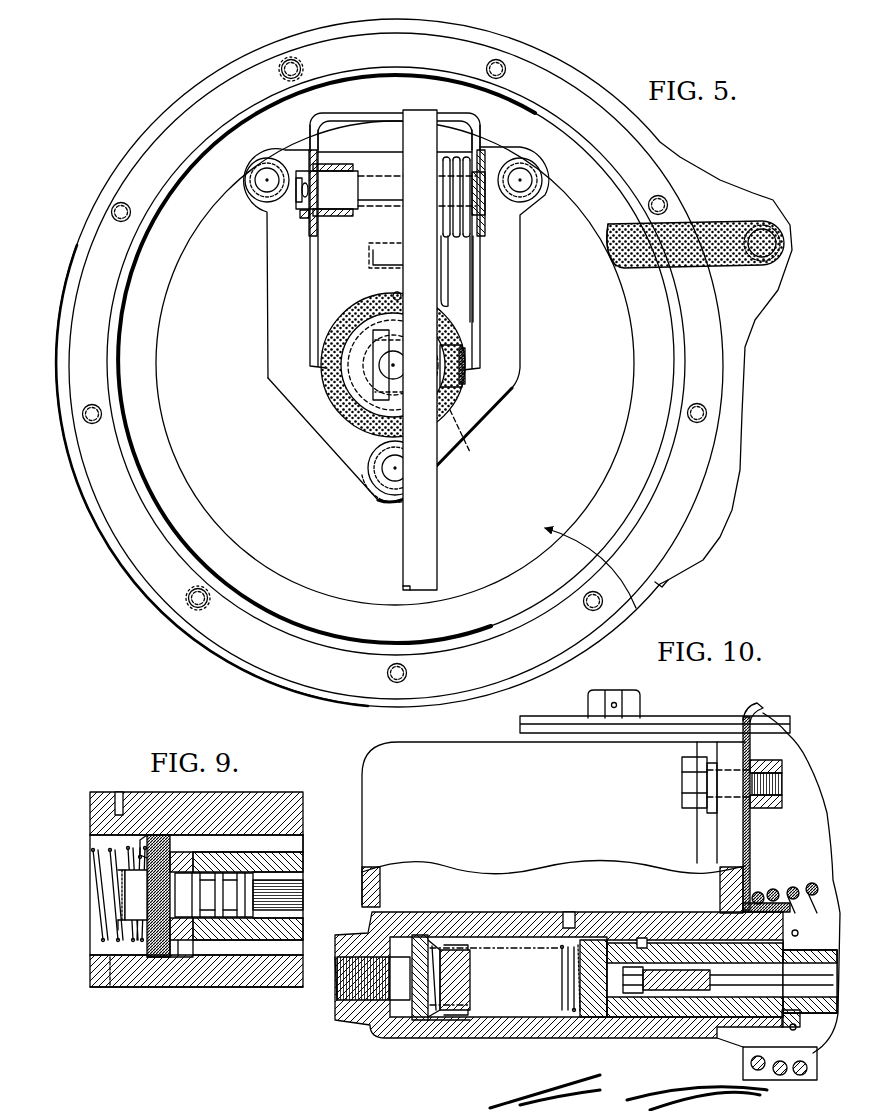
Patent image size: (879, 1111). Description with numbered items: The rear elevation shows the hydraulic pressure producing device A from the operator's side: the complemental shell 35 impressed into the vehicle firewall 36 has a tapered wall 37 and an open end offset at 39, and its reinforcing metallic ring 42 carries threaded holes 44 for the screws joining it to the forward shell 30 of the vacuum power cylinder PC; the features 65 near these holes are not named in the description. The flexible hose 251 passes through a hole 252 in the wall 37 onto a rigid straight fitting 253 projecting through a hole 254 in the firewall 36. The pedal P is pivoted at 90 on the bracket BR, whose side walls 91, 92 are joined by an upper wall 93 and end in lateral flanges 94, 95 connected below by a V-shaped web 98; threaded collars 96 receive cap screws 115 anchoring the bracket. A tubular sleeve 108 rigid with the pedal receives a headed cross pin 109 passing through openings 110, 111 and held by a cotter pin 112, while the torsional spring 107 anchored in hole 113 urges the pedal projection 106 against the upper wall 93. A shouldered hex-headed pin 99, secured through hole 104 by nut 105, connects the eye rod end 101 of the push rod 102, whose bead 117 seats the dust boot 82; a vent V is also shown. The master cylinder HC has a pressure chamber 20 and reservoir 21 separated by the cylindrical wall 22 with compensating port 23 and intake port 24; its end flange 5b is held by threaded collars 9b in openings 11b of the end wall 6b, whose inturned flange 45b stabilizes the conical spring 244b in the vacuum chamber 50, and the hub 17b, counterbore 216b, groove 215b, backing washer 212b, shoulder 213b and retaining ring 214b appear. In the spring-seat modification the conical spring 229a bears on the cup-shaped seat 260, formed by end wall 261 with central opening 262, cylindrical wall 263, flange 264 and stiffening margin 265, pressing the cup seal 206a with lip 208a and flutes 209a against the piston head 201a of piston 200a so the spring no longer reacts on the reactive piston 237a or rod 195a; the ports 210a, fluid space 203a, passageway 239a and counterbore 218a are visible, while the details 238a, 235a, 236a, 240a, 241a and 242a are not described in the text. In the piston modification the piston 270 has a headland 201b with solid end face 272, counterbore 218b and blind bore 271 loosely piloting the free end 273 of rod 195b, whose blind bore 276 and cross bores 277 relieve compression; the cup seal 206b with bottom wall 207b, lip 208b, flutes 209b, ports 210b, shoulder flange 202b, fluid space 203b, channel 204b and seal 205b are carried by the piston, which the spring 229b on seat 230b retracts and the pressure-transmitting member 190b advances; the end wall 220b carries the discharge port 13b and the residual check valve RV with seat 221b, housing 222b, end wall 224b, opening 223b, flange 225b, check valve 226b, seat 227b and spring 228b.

In FIG. 5, the vehicle firewall 36 is at (541, 56).
In FIG. 5, the offset of shell open end 39 is at (584, 83).
In FIG. 5, the circular tapered wall 37 is at (660, 574).
In FIG. 5, the reinforcing metallic ring 42 is at (626, 148).
In FIG. 5, the bolt hole 65 is at (286, 65).
In FIG. 5, the threaded holes 44 is at (283, 63).
In FIG. 5, the hydraulic pressure producing device A is at (277, 680).
In FIG. 10, the hydraulic pressure producing device A is at (745, 712).
In FIG. 5, the complemental casing or shell 35 is at (636, 608).
In FIG. 5, the vacuum power cylinder PC is at (660, 190).
In FIG. 10, the vacuum power cylinder PC is at (806, 760).
In FIG. 5, the flexible hose 251 is at (698, 231).
In FIG. 5, the hole in shell wall 252 is at (614, 254).
In FIG. 5, the rigid straight tubular fitting 253 is at (767, 220).
In FIG. 5, the hole in firewall 254 is at (774, 268).
In FIG. 5, the outturned lateral flange 94 is at (270, 266).
In FIG. 5, the V-shaped web segment 98 is at (269, 376).
In FIG. 5, the side wall of bracket 91 is at (312, 302).
In FIG. 5, the outturned lateral flange 95 is at (508, 275).
In FIG. 5, the side wall of bracket 92 is at (480, 298).
In FIG. 5, the dust boot 82 is at (463, 442).
In FIG. 5, the upper wall of bracket 93 is at (329, 113).
In FIG. 5, the threaded collar 96 is at (273, 158).
In FIG. 5, the cap screws 115 is at (262, 182).
In FIG. 5, the pedal pivot 90 is at (359, 166).
In FIG. 5, the headed cross pin 109 is at (338, 198).
In FIG. 5, the opening in side wall 110 is at (312, 218).
In FIG. 5, the cotter pin 112 is at (294, 208).
In FIG. 5, the tubular sleeve 108 is at (398, 213).
In FIG. 5, the spring anchor hole 113 is at (475, 156).
In FIG. 5, the opening in side wall 111 is at (484, 222).
In FIG. 5, the torsional spring 107 is at (470, 233).
In FIG. 5, the vent V is at (370, 262).
In FIG. 5, the push rod 102 is at (352, 424).
In FIG. 5, the eye rod end 101 is at (388, 322).
In FIG. 5, the bead of dust boot 117 is at (371, 388).
In FIG. 5, the shouldered hex-headed pin 99 is at (375, 369).
In FIG. 5, the nut 105 is at (474, 388).
In FIG. 5, the hole in pedal 104 is at (441, 394).
In FIG. 5, the bracket BR is at (267, 344).
In FIG. 5, the pedal projection 106 is at (413, 110).
In FIG. 5, the pedal P is at (440, 535).
In FIG. 9, the hydraulic master cylinder HC is at (110, 792).
In FIG. 10, the hydraulic master cylinder HC is at (550, 789).
In FIG. 9, the cylindrical wall 22 is at (262, 803).
In FIG. 10, the cylindrical wall 22 is at (502, 920).
In FIG. 9, the compensating port 23 is at (119, 796).
In FIG. 10, the compensating port 23 is at (569, 910).
In FIG. 9, the intake port 24 is at (198, 798).
In FIG. 10, the intake port 24 is at (613, 913).
In FIG. 9, the pressure working chamber 20 is at (107, 837).
In FIG. 10, the pressure working chamber 20 is at (475, 907).
In FIG. 9, the piston 238a is at (187, 847).
In FIG. 9, the angular marginal portion 265 is at (148, 845).
In FIG. 9, the outturned flange 264 is at (140, 857).
In FIG. 9, the conical spring 229a is at (123, 853).
In FIG. 9, the modified spring seat member 260 is at (118, 882).
In FIG. 9, the end wall of seat 261 is at (122, 895).
In FIG. 9, the central opening 262 is at (123, 917).
In FIG. 9, the cylindrical wall of seat 263 is at (140, 895).
In FIG. 9, the peripheral lip 208a is at (130, 953).
In FIG. 9, the cup seal 206a is at (127, 982).
In FIG. 9, the piston head 201a is at (173, 953).
In FIG. 9, the headland ports 210a is at (178, 955).
In FIG. 9, the reactive piston 237a is at (195, 945).
In FIG. 9, the flutes 209a is at (127, 985).
In FIG. 9, the passageway 239a is at (192, 858).
In FIG. 9, the groove 242a is at (233, 873).
In FIG. 9, the land 240a is at (200, 920).
In FIG. 9, the land 241a is at (233, 920).
In FIG. 9, the threaded rod 236a is at (303, 885).
In FIG. 9, the bore wall 235a is at (303, 872).
In FIG. 9, the counterbore 218a is at (303, 917).
In FIG. 9, the thrust receiving rod 195a is at (302, 855).
In FIG. 9, the annular fluid space 203a is at (303, 850).
In FIG. 9, the master cylinder piston 200a is at (302, 843).
In FIG. 10, the liquid reservoir 21 is at (652, 777).
In FIG. 10, the forward detachable shell 30 is at (755, 712).
In FIG. 10, the end flange 5b is at (713, 743).
In FIG. 10, the internally threaded collar 9b is at (752, 762).
In FIG. 10, the circular opening 11b is at (743, 812).
In FIG. 10, the forward end wall 6b is at (743, 833).
In FIG. 10, the vacuum-power chamber 50 is at (808, 827).
In FIG. 10, the reactive and return spring 244b is at (808, 872).
In FIG. 10, the inturned circular flange 45b is at (760, 892).
In FIG. 10, the counterbore 216b is at (791, 893).
In FIG. 10, the internal annular groove 215b is at (812, 885).
In FIG. 10, the cylindrical hub 17b is at (799, 931).
In FIG. 10, the end wall of cylinder 220b is at (413, 1018).
In FIG. 10, the removable annular valve seat 221b is at (418, 917).
In FIG. 10, the outturned annular flange 225b is at (428, 913).
In FIG. 10, the cup-shaped housing 222b is at (447, 917).
In FIG. 10, the opening 223b is at (470, 977).
In FIG. 10, the housing end wall 224b is at (456, 952).
In FIG. 10, the one-way check-valve 226b is at (466, 988).
In FIG. 10, the annular valve seat 227b is at (464, 1003).
In FIG. 10, the cup-shaped spring seat 230b is at (570, 957).
In FIG. 10, the solid end face 272 is at (568, 978).
In FIG. 10, the conical spring 229b is at (572, 1000).
In FIG. 10, the preloaded spring 228b is at (450, 1020).
In FIG. 10, the residual pressure check-valve RV is at (406, 1012).
In FIG. 10, the discharge port 13b is at (335, 990).
In FIG. 10, the headland 201b is at (578, 1020).
In FIG. 10, the free end of rod 273 is at (658, 1023).
In FIG. 10, the blind bore 271 is at (633, 1023).
In FIG. 10, the pressure-transmitting member 190b is at (771, 981).
In FIG. 10, the reactive rod 195b is at (810, 981).
In FIG. 10, the backing washer 212b is at (800, 1027).
In FIG. 10, the internal annular shoulder 213b is at (773, 1078).
In FIG. 10, the retaining ring 214b is at (807, 1070).
In FIG. 10, the shoulder flange 202b is at (705, 915).
In FIG. 10, the annular fluid space 203b is at (690, 1013).
In FIG. 10, the fluid-retaining seal 205b is at (713, 1027).
In FIG. 10, the counterbore 218b is at (670, 1033).
In FIG. 10, the cup seal bottom wall 207b is at (617, 1033).
In FIG. 10, the cup seal 206b is at (563, 1033).
In FIG. 10, the peripheral lip 208b is at (565, 928).
In FIG. 10, the flutes 209b is at (568, 925).
In FIG. 10, the modified piston 270 is at (634, 937).
In FIG. 10, the axial blind bore 276 is at (657, 927).
In FIG. 10, the headland ports 210b is at (620, 930).
In FIG. 10, the cross bores 277 is at (660, 930).
In FIG. 10, the annular channel 204b is at (707, 912).